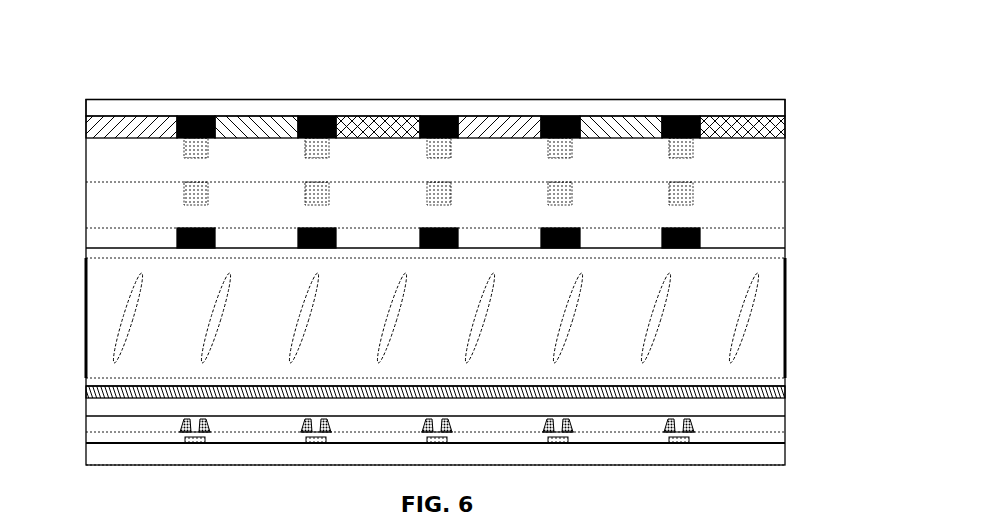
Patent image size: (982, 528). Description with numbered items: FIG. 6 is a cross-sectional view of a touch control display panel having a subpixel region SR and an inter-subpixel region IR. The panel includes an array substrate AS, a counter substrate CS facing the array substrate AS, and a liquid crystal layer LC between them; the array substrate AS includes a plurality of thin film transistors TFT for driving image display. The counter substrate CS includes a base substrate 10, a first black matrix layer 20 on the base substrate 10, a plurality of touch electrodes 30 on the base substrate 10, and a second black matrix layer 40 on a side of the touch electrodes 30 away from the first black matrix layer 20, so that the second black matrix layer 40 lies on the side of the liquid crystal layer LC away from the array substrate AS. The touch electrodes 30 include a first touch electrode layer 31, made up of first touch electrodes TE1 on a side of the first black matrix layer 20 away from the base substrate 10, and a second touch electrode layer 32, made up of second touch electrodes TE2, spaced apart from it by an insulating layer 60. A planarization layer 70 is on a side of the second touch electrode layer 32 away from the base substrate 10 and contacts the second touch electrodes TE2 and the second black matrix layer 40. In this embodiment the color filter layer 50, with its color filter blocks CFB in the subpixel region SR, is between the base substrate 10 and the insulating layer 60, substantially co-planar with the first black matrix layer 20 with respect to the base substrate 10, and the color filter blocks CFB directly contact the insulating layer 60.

The base substrate 10 is at (777, 107).
The color filter layer 50 is at (745, 127).
The first black matrix layer 20 is at (703, 137).
The touch electrodes 30 is at (532, 195).
The first touch electrode layer 31 is at (683, 147).
The second touch electrode layer 32 is at (683, 193).
The insulating layer 60 is at (435, 175).
The planarization layer 70 is at (435, 218).
The second black matrix layer 40 is at (700, 245).
The color filter blocks CFB is at (253, 127).
The first touch electrodes TE1 is at (327, 147).
The second touch electrodes TE2 is at (327, 193).
The thin film transistors TFT is at (213, 436).
The subpixel region SR is at (662, 116).
The inter-subpixel region IR is at (700, 116).
The counter substrate CS is at (80, 100).
The liquid crystal layer LC is at (80, 259).
The array substrate AS is at (80, 380).